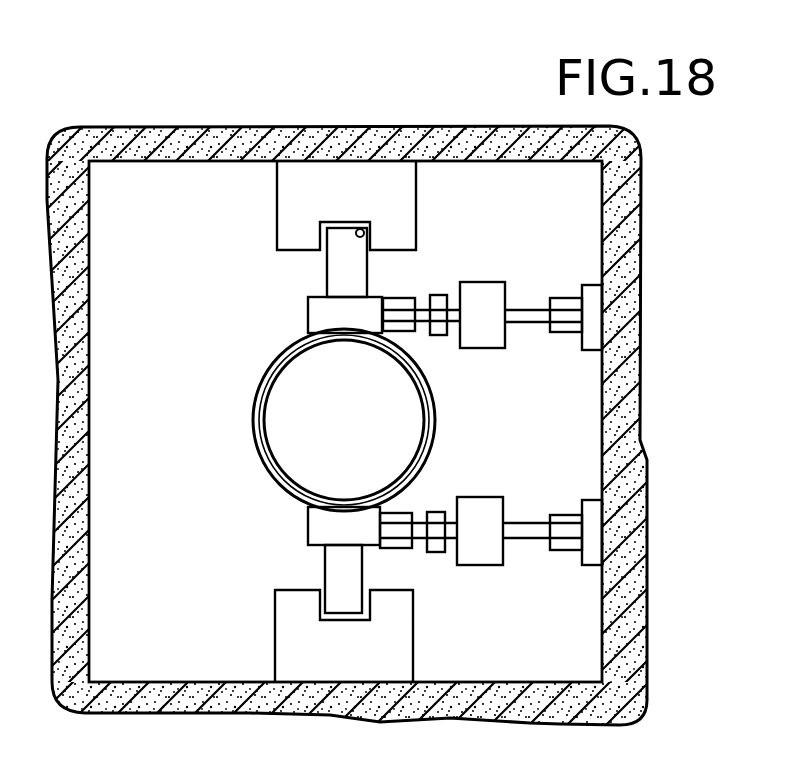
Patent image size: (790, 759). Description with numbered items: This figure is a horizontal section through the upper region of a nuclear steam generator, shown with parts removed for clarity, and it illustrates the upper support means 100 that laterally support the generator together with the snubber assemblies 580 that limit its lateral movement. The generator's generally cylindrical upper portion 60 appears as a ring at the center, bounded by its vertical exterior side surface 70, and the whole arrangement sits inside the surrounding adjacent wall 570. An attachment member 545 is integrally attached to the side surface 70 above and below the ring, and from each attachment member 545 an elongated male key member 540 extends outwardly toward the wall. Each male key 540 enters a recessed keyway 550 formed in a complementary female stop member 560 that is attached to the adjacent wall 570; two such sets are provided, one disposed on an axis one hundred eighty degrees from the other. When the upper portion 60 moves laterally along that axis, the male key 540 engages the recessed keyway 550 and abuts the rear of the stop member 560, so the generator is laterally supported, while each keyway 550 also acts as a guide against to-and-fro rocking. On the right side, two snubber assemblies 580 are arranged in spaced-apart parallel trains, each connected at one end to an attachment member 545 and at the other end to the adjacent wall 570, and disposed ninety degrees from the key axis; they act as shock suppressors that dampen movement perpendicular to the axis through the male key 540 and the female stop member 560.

The adjacent wall 570 is at (233, 134).
The female stop member 560 is at (290, 204).
The recessed keyway 550 is at (364, 226).
The male key member 540 is at (354, 276).
The attachment member 545 is at (323, 304).
The upper support means 100 is at (436, 260).
The snubber assembly 580 is at (482, 570).
The upper portion 60 is at (437, 403).
The exterior side surface 70 is at (437, 442).